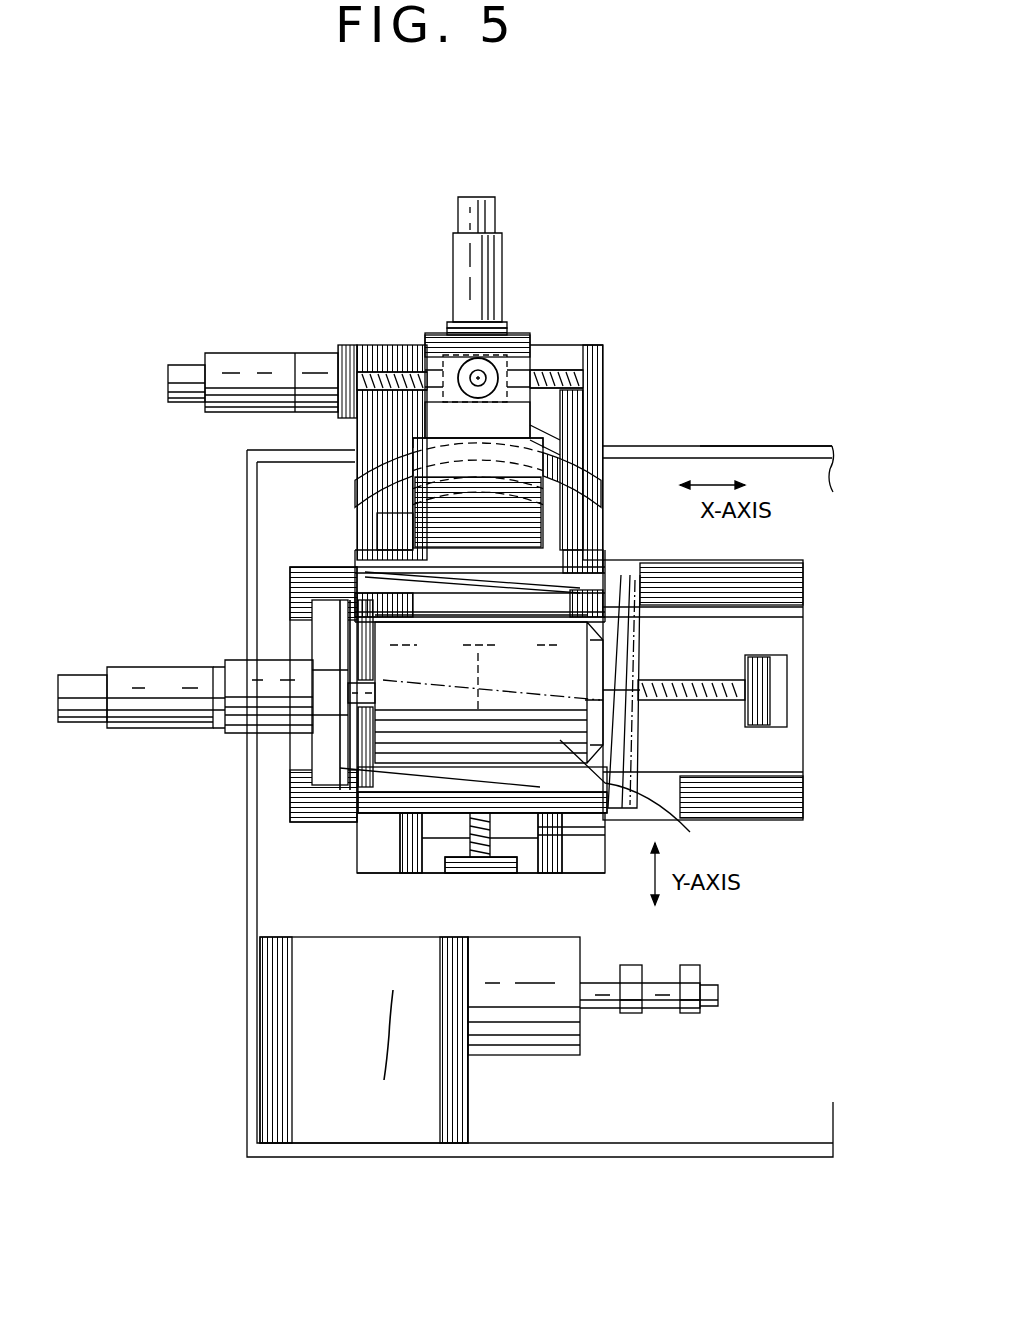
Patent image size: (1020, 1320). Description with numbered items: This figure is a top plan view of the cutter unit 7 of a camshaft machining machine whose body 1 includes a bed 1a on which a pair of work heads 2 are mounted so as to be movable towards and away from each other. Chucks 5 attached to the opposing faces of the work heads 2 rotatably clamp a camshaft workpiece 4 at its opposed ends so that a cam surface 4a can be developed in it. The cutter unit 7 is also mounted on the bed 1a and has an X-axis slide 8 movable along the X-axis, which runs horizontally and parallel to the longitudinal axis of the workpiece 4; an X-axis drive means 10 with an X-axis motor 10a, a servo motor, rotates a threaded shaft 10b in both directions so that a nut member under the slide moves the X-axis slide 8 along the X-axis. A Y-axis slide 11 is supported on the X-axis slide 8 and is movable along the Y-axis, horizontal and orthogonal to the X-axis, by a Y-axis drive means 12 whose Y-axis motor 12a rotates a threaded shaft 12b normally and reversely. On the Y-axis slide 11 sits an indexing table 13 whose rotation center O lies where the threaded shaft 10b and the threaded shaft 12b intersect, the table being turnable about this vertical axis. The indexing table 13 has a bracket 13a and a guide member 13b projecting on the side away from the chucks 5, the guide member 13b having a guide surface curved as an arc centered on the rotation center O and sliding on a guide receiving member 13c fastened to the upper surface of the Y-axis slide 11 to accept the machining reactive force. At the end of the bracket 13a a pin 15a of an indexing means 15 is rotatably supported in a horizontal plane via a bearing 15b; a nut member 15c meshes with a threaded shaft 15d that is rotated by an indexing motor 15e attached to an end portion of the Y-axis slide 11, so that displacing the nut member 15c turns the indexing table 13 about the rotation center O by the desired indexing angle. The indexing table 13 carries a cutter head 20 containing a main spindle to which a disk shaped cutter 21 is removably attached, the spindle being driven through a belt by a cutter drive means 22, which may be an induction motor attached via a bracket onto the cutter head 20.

The body 1 is at (688, 445).
The bed 1a is at (757, 446).
The work head 2 is at (300, 948).
The camshaft workpiece 4 is at (713, 1008).
The cam surface 4a is at (688, 1013).
The chuck 5 is at (537, 1013).
The cutter unit 7 is at (548, 878).
The X-axis slide 8 is at (368, 862).
The X-axis drive means 10 is at (215, 735).
The X-axis motor 10a is at (168, 683).
The threaded shaft 10b is at (700, 683).
The Y-axis slide 11 is at (372, 802).
The Y-axis drive means 12 is at (512, 271).
The Y-axis motor 12a is at (487, 262).
The threaded shaft 12b is at (478, 856).
The indexing table 13 is at (543, 560).
The bracket 13a is at (513, 418).
The guide member 13b is at (567, 440).
The guide receiving member 13c is at (357, 488).
The indexing means 15 is at (410, 400).
The pin 15a is at (493, 363).
The bearing 15b is at (486, 380).
The nut member 15c is at (453, 360).
The threaded shaft 15d is at (375, 362).
The indexing motor 15e is at (240, 357).
The cutter head 20 is at (577, 597).
The disk shaped cutter 21 is at (640, 752).
The cutter drive means 22 is at (638, 799).
The rotation center O is at (478, 690).